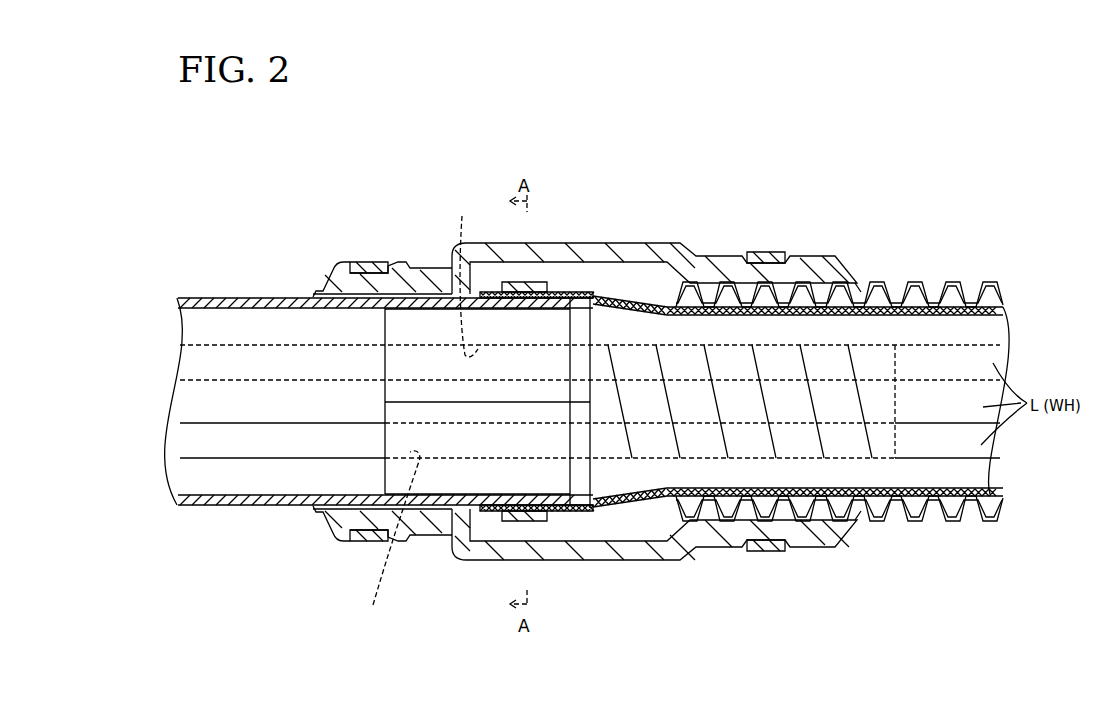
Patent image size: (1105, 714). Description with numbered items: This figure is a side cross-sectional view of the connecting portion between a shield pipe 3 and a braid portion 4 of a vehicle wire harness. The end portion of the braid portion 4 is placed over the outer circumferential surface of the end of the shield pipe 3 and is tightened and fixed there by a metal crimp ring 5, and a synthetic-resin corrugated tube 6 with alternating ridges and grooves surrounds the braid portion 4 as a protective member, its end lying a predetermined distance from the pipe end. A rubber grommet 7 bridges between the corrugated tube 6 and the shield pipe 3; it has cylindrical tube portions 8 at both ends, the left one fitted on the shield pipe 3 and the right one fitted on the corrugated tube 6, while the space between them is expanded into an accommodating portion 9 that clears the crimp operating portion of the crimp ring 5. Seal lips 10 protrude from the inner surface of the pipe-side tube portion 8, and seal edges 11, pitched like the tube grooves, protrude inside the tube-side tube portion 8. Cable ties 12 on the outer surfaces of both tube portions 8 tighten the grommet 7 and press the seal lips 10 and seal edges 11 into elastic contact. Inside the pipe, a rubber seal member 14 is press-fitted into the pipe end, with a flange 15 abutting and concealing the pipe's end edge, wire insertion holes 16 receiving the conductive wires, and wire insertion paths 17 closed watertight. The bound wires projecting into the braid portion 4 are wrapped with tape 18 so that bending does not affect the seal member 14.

The shield pipe 3 is at (203, 297).
The braid portion 4 is at (637, 300).
The crimp ring 5 is at (532, 518).
The corrugated tube 6 is at (927, 287).
The grommet 7 is at (587, 363).
The tube portion 8 is at (438, 280).
The accommodating portion 9 is at (593, 243).
The seal lip 10 is at (317, 294).
The seal edge 11 is at (863, 288).
The cable tie 12 is at (367, 262).
The seal member 14 is at (444, 475).
The flange 15 is at (583, 480).
The wire insertion hole 16 is at (421, 414).
The wire insertion path 17 is at (420, 403).
The tape 18 is at (752, 443).